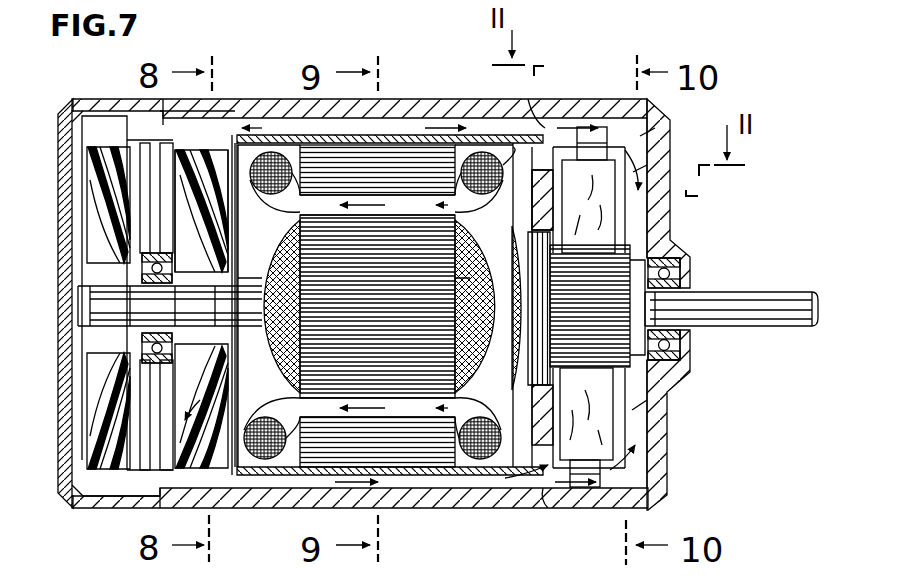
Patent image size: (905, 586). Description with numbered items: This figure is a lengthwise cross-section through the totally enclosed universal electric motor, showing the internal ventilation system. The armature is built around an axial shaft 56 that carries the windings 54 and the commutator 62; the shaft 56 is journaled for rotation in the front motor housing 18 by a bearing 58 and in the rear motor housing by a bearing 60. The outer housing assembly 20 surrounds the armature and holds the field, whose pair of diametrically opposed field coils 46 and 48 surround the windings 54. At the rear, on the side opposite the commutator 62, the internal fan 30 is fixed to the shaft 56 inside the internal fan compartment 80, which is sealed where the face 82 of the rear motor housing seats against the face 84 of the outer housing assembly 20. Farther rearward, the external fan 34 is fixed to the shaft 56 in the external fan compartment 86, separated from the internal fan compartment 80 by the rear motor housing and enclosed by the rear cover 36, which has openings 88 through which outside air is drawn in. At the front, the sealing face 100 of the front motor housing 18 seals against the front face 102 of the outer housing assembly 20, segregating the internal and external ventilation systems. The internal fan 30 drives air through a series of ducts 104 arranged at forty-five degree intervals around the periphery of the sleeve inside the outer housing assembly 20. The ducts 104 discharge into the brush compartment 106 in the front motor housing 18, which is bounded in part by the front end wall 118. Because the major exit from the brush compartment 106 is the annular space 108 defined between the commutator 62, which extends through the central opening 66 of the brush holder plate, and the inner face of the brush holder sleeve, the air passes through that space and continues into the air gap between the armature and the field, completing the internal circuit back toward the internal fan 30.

The front motor housing 18 is at (672, 451).
The outer housing assembly 20 is at (436, 508).
The internal fan 30 is at (226, 214).
The external fan 34 is at (110, 429).
The rear cover 36 is at (62, 146).
The field coil 46 is at (272, 143).
The field coil 48 is at (300, 388).
The windings 54 is at (262, 218).
The axial shaft 56 is at (760, 293).
The bearing 58 is at (672, 343).
The bearing 60 is at (160, 308).
The commutator 62 is at (596, 408).
The central opening 66 is at (545, 232).
The internal fan compartment 80 is at (232, 128).
The face 82 is at (165, 476).
The face 84 is at (166, 112).
The external fan compartment 86 is at (99, 496).
The openings 88 is at (73, 224).
The sealing face 100 is at (526, 104).
The front face 102 is at (530, 506).
The ducts 104 is at (392, 128).
The brush compartment 106 is at (655, 128).
The annular space 108 is at (647, 400).
The front end wall 118 is at (647, 165).